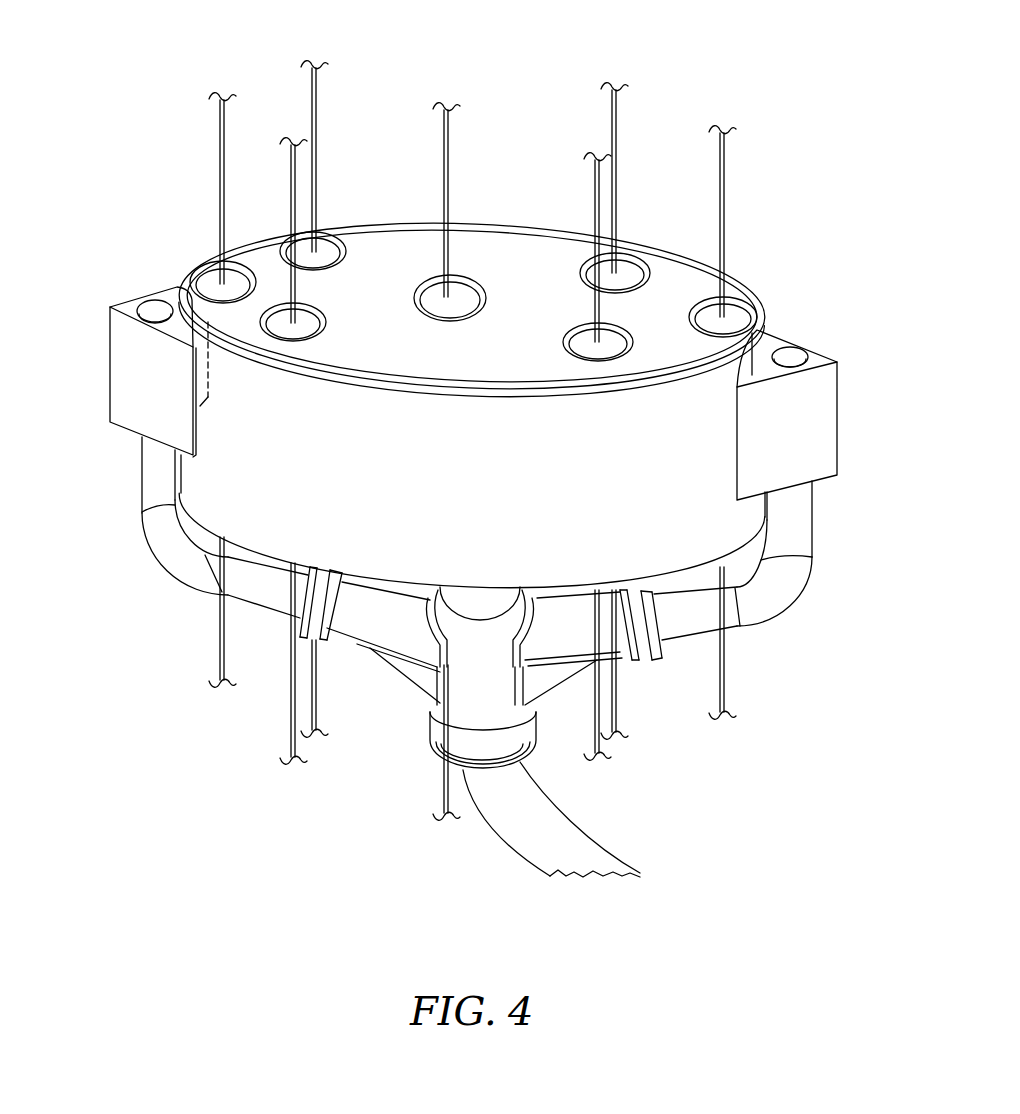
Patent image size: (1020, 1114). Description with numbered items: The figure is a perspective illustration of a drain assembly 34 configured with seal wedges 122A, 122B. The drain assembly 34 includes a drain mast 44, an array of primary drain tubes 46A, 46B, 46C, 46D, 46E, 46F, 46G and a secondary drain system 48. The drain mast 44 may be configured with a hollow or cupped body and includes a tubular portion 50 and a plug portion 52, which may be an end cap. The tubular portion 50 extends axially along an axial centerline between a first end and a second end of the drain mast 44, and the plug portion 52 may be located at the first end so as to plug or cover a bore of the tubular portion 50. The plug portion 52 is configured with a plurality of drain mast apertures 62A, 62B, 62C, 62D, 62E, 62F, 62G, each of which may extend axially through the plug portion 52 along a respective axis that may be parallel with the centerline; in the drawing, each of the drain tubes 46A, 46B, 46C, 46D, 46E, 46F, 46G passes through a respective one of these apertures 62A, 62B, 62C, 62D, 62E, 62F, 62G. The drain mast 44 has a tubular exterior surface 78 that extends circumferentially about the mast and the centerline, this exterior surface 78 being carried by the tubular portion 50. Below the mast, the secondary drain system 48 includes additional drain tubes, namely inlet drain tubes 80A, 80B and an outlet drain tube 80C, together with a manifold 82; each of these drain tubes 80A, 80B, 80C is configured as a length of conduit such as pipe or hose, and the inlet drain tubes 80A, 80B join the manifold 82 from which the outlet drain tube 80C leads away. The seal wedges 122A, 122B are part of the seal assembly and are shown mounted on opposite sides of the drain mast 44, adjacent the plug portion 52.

The drain assembly 34 is at (800, 86).
The drain mast 44 is at (741, 298).
The drain tube 46A is at (222, 130).
The drain tube 46B is at (315, 120).
The drain tube 46C is at (292, 163).
The drain tube 46D is at (448, 150).
The drain tube 46E is at (617, 123).
The drain tube 46F is at (597, 203).
The drain tube 46G is at (724, 167).
The drain system 48 is at (510, 855).
The tubular portion 50 is at (795, 572).
The plug portion 52 is at (680, 287).
The drain mast aperture 62A is at (204, 270).
The drain mast aperture 62B is at (326, 240).
The drain mast aperture 62C is at (311, 313).
The drain mast aperture 62D is at (462, 293).
The drain mast aperture 62E is at (627, 267).
The drain mast aperture 62F is at (577, 337).
The drain mast aperture 62G is at (765, 306).
The tubular exterior surface 78 is at (240, 497).
The inlet drain tube 80A is at (163, 572).
The inlet drain tube 80B is at (793, 610).
The outlet drain tube 80C is at (550, 877).
The manifold 82 is at (437, 715).
The seal wedge 122A is at (107, 337).
The seal wedge 122B is at (840, 387).